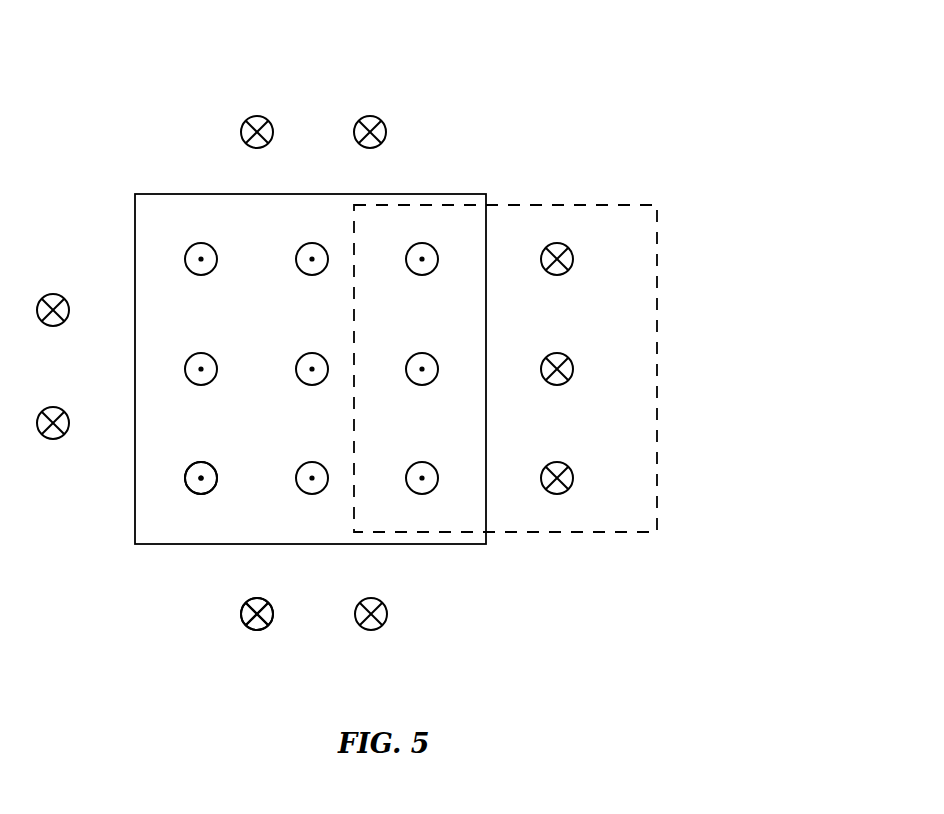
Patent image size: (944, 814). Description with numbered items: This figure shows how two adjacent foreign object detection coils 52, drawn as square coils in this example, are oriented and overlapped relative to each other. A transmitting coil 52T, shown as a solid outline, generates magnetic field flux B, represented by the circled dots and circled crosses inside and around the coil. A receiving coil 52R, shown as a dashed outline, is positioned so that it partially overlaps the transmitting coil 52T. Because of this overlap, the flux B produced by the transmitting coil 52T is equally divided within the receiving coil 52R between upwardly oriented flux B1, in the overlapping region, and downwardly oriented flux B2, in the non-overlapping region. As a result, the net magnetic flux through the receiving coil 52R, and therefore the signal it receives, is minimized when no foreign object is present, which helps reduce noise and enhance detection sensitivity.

The coils 52 is at (560, 80).
The transmitting coil 52T is at (170, 547).
The receiving coil 52R is at (505, 409).
The magnetic field flux B is at (229, 548).
The upwardly oriented flux B1 is at (441, 368).
The downwardly oriented flux B2 is at (577, 368).